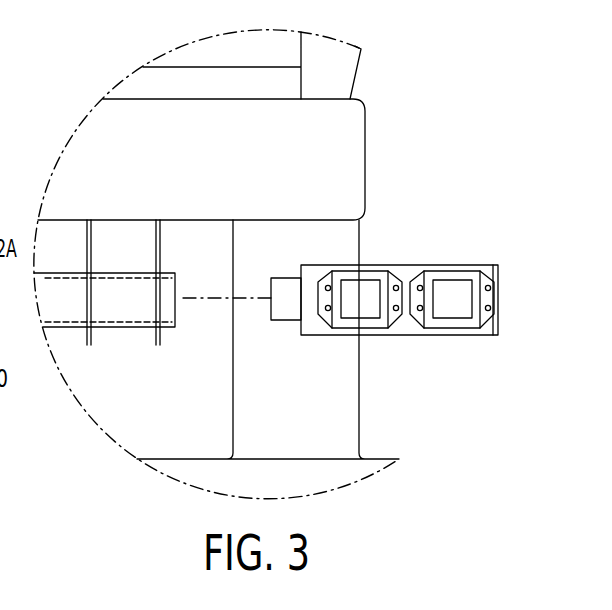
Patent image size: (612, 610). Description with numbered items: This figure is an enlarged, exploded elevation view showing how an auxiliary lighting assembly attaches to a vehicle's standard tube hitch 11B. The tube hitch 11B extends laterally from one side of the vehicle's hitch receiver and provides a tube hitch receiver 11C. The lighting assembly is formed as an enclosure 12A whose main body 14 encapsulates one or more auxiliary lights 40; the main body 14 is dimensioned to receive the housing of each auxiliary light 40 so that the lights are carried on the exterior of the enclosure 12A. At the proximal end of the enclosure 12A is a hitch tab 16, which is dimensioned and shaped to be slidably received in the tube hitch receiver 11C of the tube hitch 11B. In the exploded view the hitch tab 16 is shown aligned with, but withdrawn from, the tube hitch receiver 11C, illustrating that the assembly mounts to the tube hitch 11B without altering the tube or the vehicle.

The tube hitch 11B is at (115, 328).
The tube hitch receiver 11C is at (168, 287).
The main body 14 is at (406, 305).
The enclosure 12A is at (461, 317).
The hitch tab 16 is at (287, 313).
The auxiliary light 40 is at (455, 313).